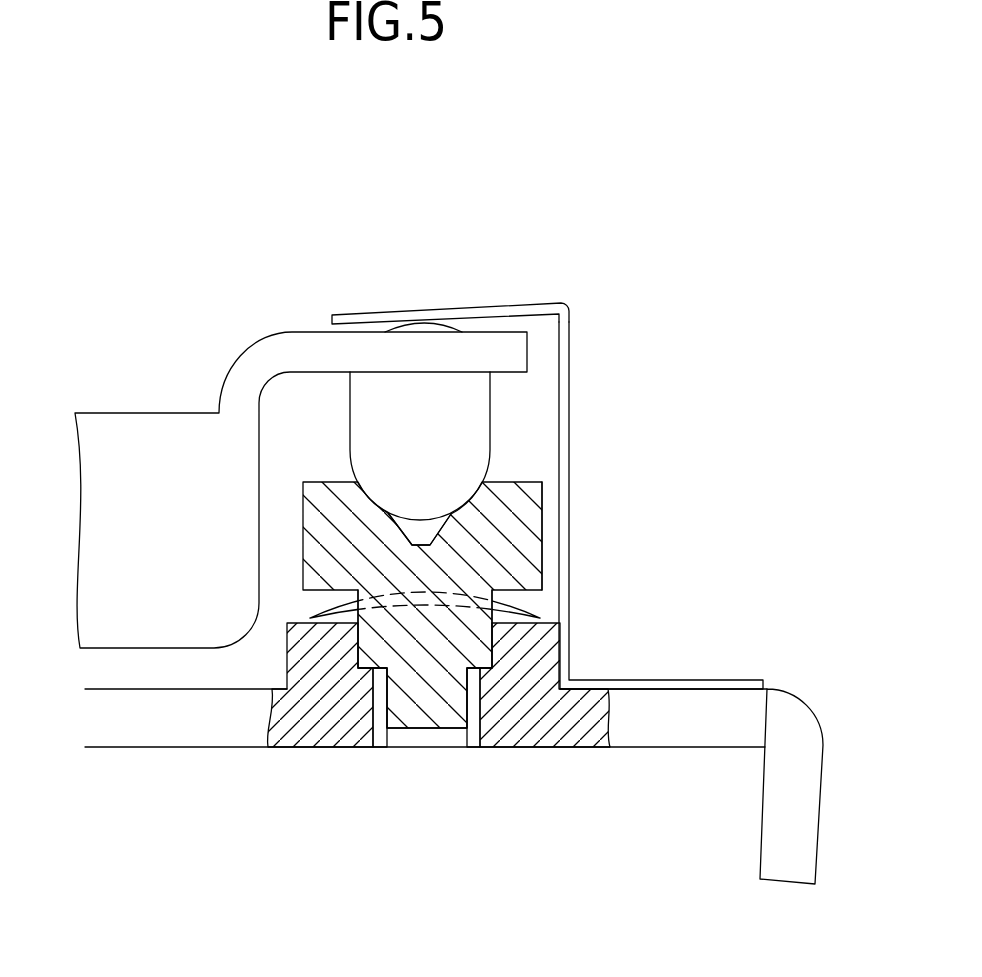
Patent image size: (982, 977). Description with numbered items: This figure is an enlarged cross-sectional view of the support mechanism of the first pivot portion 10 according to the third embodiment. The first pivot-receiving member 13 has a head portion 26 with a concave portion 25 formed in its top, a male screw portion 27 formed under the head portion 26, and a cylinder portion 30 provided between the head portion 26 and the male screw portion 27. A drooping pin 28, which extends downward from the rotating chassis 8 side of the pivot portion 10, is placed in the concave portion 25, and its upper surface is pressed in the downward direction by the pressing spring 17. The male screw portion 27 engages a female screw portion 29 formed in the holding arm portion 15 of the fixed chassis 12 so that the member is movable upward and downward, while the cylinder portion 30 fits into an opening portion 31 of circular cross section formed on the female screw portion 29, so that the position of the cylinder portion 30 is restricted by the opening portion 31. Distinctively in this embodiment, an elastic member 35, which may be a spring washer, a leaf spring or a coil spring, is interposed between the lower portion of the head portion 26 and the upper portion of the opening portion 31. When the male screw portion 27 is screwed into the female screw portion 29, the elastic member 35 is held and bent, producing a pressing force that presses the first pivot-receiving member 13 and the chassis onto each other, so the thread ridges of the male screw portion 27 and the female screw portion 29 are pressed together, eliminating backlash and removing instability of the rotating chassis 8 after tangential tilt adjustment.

The rotating chassis 8 is at (237, 372).
The first pivot portion 10 is at (412, 307).
The fixed chassis 12 is at (805, 722).
The first pivot-receiving member 13 is at (547, 562).
The holding arm portion 15 is at (652, 725).
The pressing spring 17 is at (573, 333).
The concave portion 25 is at (397, 538).
The head portion 26 is at (530, 517).
The male screw portion 27 is at (423, 680).
The drooping pin 28 is at (390, 385).
The female screw portion 29 is at (468, 680).
The cylinder portion 30 is at (497, 628).
The opening portion 31 is at (322, 710).
The elastic member 35 is at (310, 616).